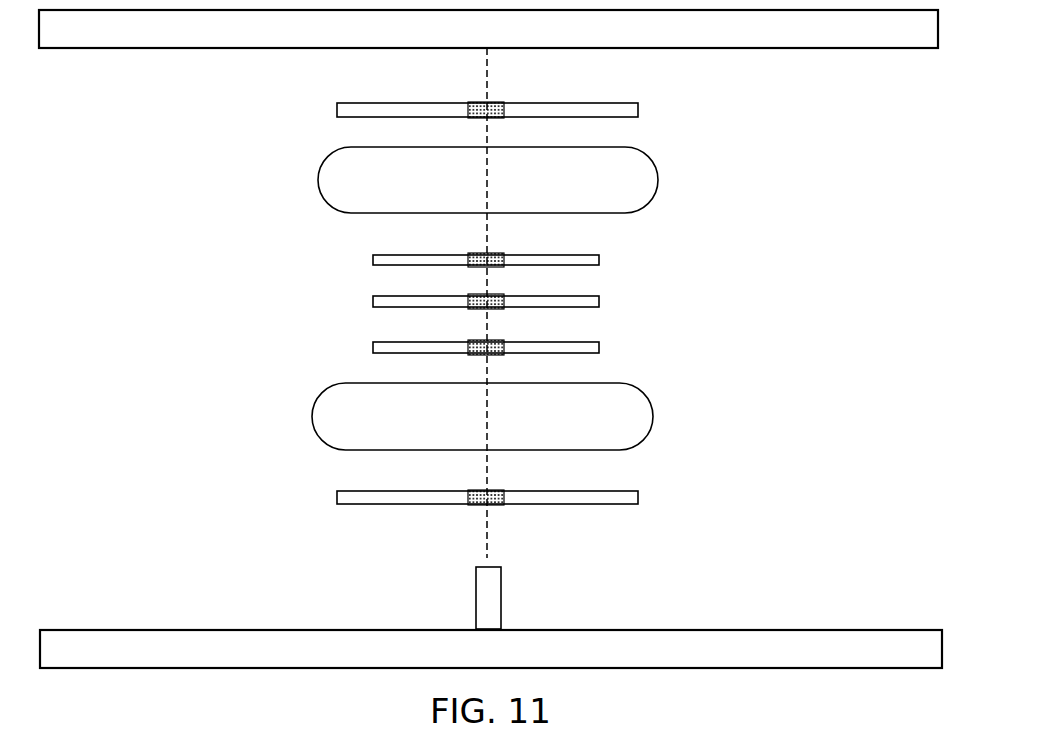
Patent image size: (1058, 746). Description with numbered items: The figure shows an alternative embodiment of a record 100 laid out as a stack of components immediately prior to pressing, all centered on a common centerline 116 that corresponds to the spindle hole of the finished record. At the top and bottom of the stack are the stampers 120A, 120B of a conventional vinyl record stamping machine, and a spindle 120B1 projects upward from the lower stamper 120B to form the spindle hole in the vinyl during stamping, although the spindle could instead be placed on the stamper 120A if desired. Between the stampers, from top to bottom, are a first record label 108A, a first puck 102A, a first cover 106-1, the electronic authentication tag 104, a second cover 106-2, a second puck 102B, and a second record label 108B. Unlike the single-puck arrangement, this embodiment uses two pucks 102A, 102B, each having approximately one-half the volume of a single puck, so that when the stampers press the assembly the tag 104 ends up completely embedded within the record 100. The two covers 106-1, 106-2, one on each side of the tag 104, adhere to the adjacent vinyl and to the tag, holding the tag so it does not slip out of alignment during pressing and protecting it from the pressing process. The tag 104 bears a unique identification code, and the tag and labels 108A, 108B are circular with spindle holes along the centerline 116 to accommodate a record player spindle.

The record 100 is at (116, 105).
The first puck 102A is at (317, 177).
The second puck 102B is at (310, 415).
The electronic authentication tag 104 is at (602, 300).
The first cover 106-1 is at (363, 259).
The second cover 106-2 is at (363, 347).
The first record label 108A is at (586, 103).
The second record label 108B is at (570, 504).
The centerline 116 is at (483, 91).
The upper stamper 120A is at (517, 41).
The lower stamper 120B is at (520, 661).
The spindle 120B1 is at (507, 597).